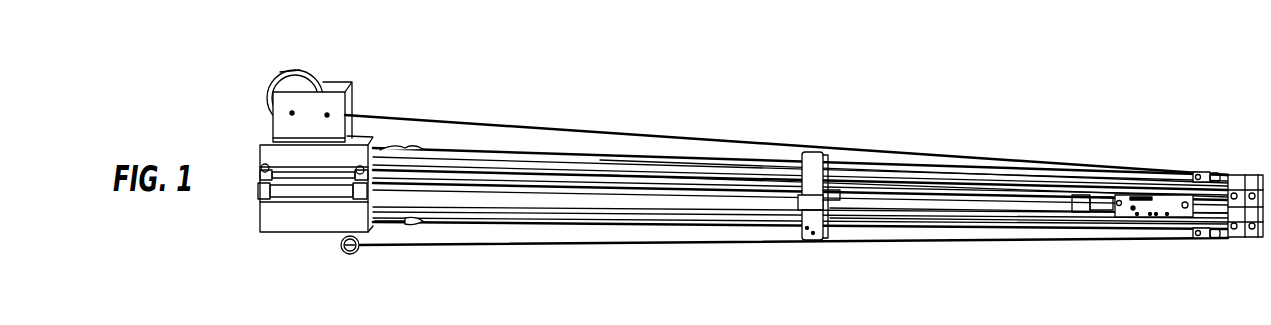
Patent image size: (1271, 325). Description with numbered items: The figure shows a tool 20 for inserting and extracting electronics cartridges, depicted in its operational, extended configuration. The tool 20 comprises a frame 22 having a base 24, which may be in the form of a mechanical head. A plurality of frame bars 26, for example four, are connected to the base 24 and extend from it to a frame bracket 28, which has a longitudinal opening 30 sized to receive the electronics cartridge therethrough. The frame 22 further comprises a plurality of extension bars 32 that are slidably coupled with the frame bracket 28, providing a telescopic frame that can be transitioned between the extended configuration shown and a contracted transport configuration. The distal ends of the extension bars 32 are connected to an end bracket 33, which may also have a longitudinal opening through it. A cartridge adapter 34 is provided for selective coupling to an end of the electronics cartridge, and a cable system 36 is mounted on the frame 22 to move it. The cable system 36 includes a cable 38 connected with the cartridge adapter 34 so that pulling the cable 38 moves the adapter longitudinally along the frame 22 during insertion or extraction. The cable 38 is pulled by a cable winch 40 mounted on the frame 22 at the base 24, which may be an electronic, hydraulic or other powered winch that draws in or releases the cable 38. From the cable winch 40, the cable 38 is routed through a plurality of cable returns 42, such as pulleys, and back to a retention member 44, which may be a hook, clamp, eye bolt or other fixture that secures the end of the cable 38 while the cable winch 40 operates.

The tool 20 is at (942, 118).
The frame 22 is at (691, 234).
The base 24 is at (282, 234).
The frame bars 26 is at (723, 200).
The frame bracket 28 is at (810, 241).
The longitudinal opening 30 is at (830, 193).
The extension bars 32 is at (945, 217).
The end bracket 33 is at (1242, 176).
The cartridge adapter 34 is at (1133, 209).
The cable system 36 is at (571, 235).
The cable 38 is at (540, 124).
The cable winch 40 is at (307, 62).
The cable returns 42 is at (407, 148).
The retention member 44 is at (352, 254).